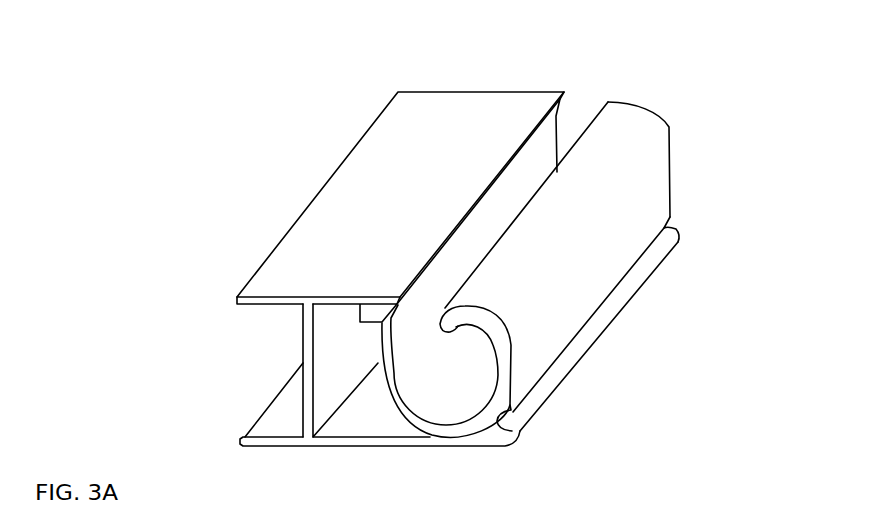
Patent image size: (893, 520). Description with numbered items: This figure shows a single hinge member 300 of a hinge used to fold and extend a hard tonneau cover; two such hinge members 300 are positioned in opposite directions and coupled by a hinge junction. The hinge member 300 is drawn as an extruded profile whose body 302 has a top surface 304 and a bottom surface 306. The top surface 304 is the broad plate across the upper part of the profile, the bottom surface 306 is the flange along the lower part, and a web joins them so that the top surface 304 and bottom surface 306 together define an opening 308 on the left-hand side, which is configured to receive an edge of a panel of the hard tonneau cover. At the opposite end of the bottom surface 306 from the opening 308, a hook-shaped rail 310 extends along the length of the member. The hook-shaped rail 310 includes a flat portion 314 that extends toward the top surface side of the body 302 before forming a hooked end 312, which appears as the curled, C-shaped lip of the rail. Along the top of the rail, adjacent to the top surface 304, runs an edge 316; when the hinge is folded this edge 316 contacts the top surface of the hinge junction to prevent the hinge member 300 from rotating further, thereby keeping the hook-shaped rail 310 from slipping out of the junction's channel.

The hinge member 300 is at (163, 182).
The body 302 is at (318, 355).
The top surface 304 is at (413, 126).
The bottom surface 306 is at (322, 448).
The opening 308 is at (263, 383).
The hook-shaped rail 310 is at (669, 127).
The hooked end 312 is at (458, 331).
The flat portion 314 is at (610, 272).
The edge 316 is at (517, 155).